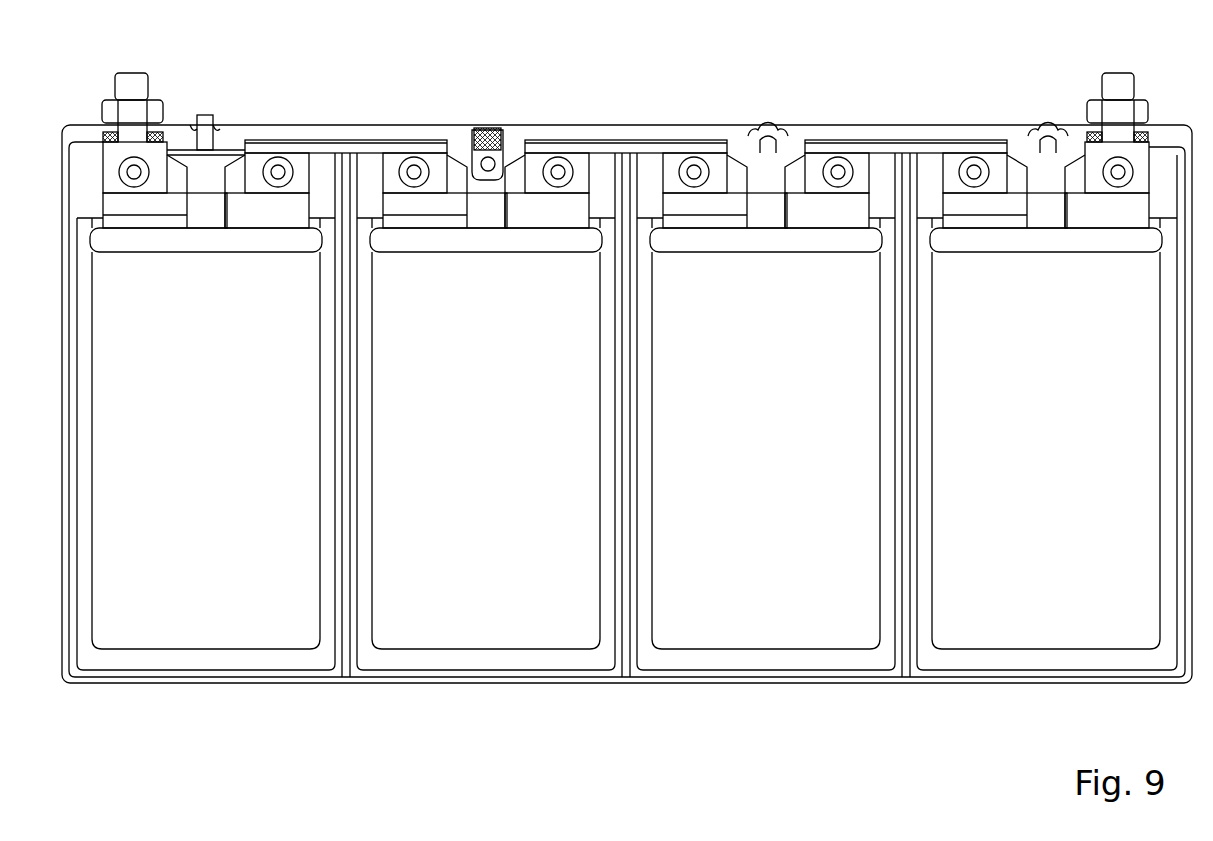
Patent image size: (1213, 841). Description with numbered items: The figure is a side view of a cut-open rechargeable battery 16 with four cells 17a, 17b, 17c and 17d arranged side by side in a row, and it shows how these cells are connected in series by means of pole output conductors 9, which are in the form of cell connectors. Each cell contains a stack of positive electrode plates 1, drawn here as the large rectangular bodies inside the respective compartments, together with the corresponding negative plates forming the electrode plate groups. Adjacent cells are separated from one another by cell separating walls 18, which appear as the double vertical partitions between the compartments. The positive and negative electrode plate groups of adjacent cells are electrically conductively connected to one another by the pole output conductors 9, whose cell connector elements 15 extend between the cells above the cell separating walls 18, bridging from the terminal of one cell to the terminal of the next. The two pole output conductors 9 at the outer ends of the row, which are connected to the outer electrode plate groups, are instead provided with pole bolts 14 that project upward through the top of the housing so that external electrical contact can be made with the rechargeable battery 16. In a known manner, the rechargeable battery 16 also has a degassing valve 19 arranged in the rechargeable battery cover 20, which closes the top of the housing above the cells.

The positive electrode plate 1 is at (218, 620).
The pole output conductor 9 is at (177, 91).
The pole bolt 14 is at (115, 82).
The cell connector element 15 is at (343, 150).
The rechargeable battery 16 is at (508, 685).
The cell 17a is at (120, 655).
The cell 17b is at (373, 655).
The cell 17c is at (652, 655).
The cell 17d is at (937, 655).
The cell separating wall 18 is at (345, 555).
The degassing valve 19 is at (487, 130).
The rechargeable battery cover 20 is at (792, 133).